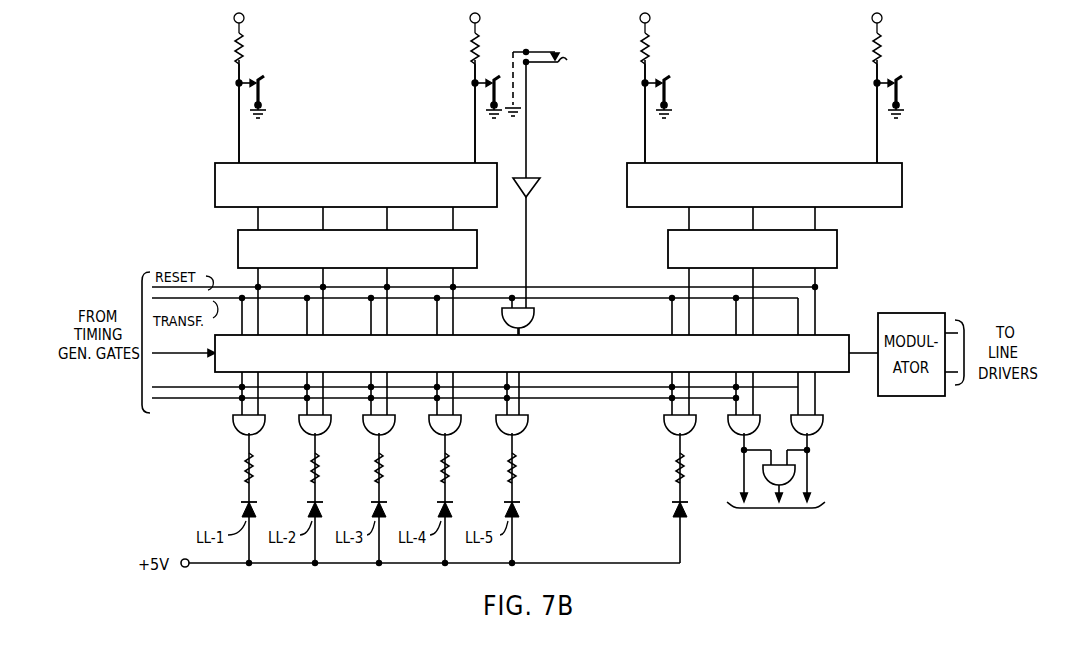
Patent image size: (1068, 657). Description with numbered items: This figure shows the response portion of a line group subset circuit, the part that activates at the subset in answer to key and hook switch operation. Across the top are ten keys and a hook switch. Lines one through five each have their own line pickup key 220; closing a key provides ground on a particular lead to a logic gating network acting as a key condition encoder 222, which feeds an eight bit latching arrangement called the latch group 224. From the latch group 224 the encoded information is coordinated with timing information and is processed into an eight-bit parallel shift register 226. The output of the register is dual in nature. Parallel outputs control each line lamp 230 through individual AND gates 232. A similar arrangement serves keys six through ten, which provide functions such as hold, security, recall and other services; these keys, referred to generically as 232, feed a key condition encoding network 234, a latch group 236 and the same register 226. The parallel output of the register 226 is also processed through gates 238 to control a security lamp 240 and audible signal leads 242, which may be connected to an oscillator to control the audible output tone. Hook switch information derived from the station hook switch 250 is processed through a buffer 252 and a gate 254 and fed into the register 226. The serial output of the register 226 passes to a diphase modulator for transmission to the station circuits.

The line pickup key 220 is at (489, 62).
The key condition encoder 222 is at (379, 163).
The latch group 224 is at (238, 246).
The eight-bit parallel shift register 226 is at (645, 335).
The line lamp 230 is at (254, 512).
The AND gate 232 is at (529, 427).
The key condition encoding network 234 is at (787, 163).
The latch group 236 is at (837, 249).
The gate 238 is at (669, 432).
The security lamp 240 is at (674, 512).
The audible signal leads 242 is at (820, 509).
The station hook switch 250 is at (584, 68).
The buffer 252 is at (539, 190).
The gate 254 is at (534, 316).